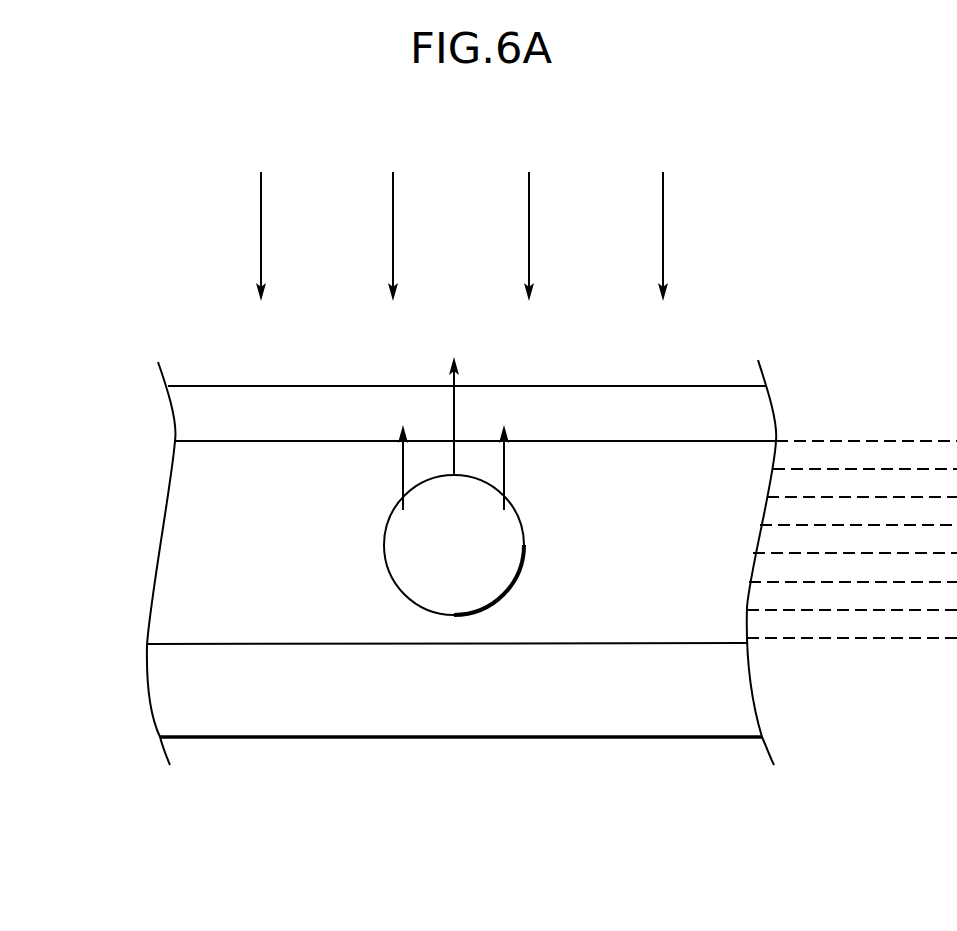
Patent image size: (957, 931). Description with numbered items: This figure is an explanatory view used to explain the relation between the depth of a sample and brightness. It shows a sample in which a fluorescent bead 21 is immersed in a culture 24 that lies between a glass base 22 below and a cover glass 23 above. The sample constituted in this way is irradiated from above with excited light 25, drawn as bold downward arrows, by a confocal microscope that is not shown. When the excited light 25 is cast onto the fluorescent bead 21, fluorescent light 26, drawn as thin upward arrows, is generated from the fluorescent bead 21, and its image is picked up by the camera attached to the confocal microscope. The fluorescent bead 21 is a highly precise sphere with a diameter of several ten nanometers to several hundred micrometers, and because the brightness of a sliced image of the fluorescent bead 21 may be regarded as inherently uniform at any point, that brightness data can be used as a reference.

The fluorescent bead 21 is at (523, 527).
The glass base 22 is at (307, 713).
The cover glass 23 is at (182, 415).
The culture 24 is at (207, 628).
The excited light 25 is at (663, 212).
The fluorescent light 26 is at (457, 395).